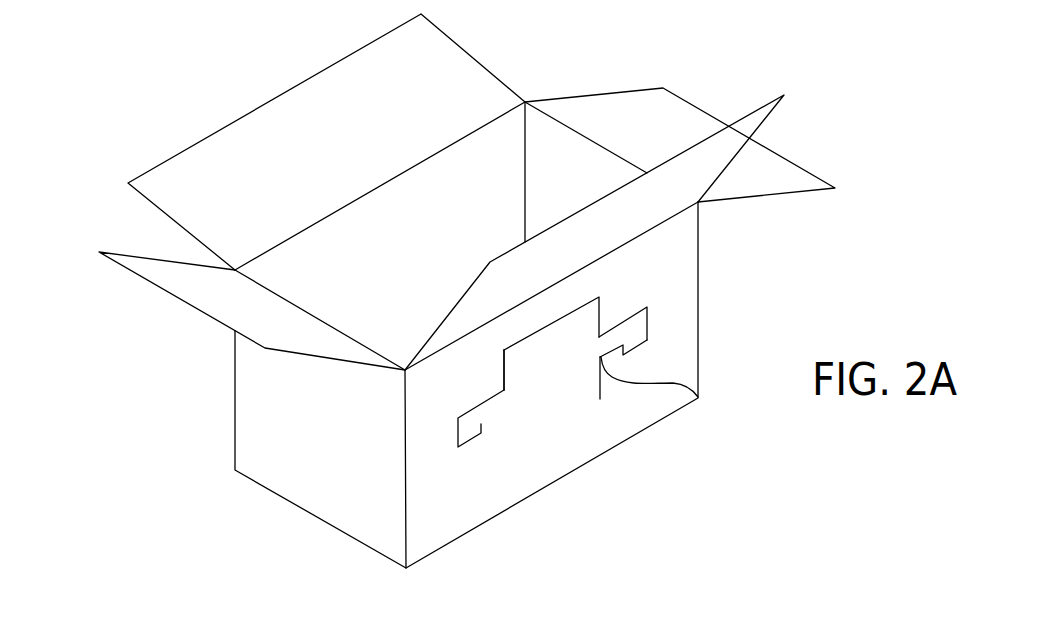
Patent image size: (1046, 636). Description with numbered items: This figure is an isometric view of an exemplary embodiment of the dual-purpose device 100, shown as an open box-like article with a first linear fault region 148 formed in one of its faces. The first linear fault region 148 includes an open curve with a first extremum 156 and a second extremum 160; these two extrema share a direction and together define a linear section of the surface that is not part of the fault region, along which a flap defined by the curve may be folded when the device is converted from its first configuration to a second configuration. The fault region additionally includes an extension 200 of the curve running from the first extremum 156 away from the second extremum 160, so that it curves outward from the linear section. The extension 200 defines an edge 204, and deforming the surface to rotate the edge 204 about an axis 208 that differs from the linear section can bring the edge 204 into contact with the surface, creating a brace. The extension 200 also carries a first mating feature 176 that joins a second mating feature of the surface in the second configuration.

The dual-purpose device 100 is at (146, 43).
The first linear fault region 148 is at (527, 335).
The first extremum 156 is at (698, 397).
The second extremum 160 is at (482, 425).
The first mating feature 176 is at (598, 393).
The extension 200 is at (648, 315).
The edge 204 is at (641, 344).
The axis 208 is at (598, 345).